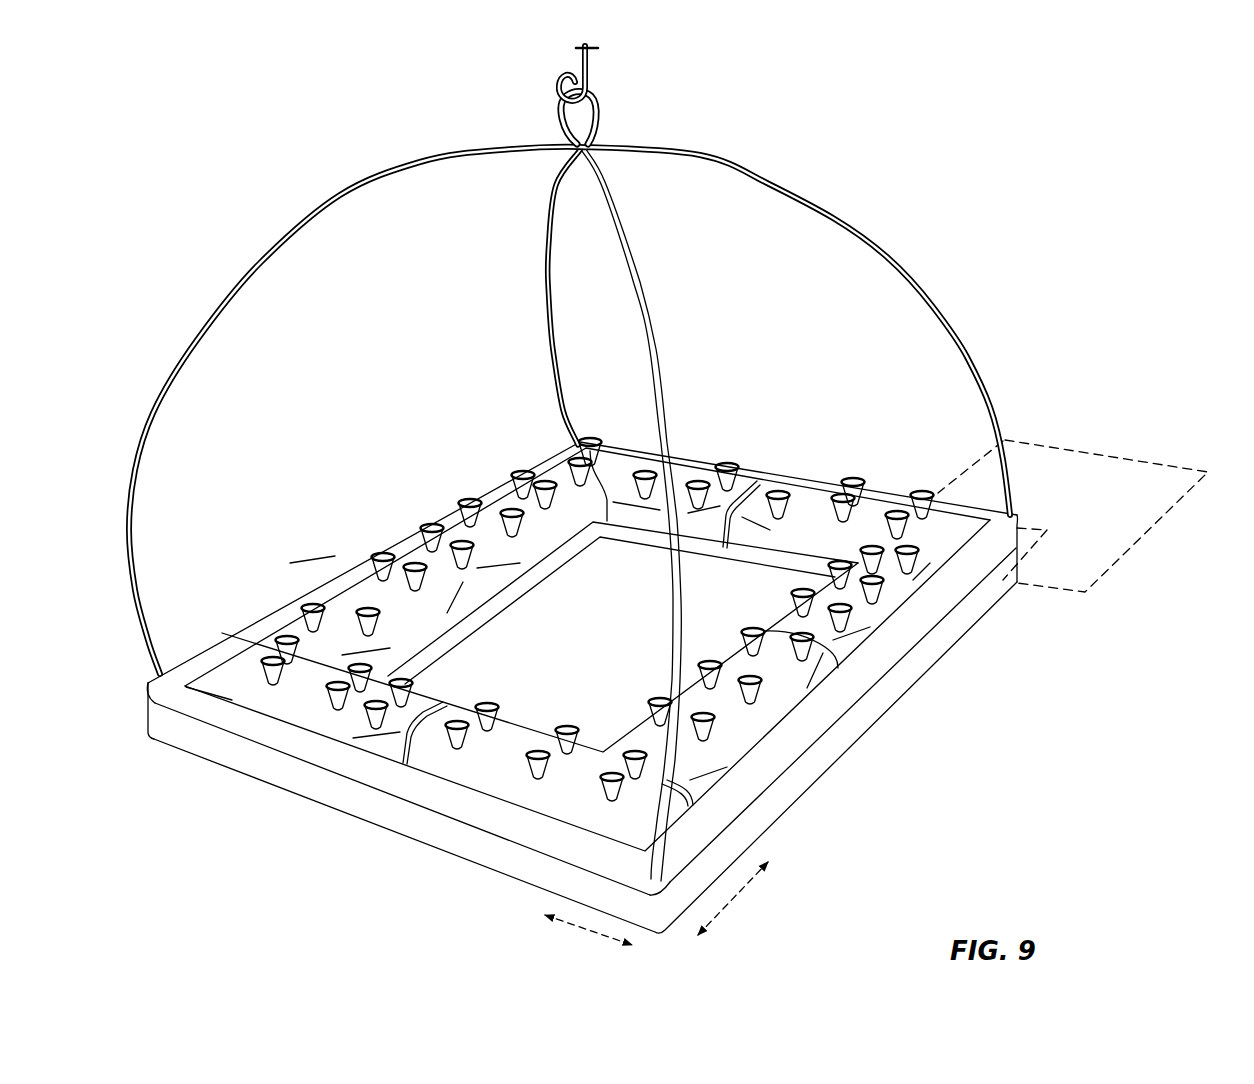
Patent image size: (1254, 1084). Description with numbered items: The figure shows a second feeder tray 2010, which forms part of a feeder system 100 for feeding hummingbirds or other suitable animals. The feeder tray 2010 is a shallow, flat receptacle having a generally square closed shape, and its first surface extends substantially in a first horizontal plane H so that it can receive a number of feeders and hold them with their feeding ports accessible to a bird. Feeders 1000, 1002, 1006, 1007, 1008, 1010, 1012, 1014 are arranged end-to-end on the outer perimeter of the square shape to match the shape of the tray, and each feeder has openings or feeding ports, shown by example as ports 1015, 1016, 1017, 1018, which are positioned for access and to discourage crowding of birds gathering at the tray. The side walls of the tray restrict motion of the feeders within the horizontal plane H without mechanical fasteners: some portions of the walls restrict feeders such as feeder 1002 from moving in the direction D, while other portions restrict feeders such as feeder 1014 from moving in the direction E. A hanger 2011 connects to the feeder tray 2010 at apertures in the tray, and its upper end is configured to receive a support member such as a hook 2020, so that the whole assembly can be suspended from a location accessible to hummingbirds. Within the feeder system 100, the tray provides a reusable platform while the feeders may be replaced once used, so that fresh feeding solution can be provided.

The feeder system 100 is at (1076, 311).
The feeder tray 2010 is at (596, 687).
The hanger 2011 is at (345, 195).
The hook 2020 is at (597, 49).
The feeder 1000 is at (230, 698).
The feeder 1002 is at (494, 499).
The feeder 1006 is at (697, 460).
The mat section 1007 is at (345, 590).
The feeder 1008 is at (800, 483).
The feeder 1010 is at (898, 594).
The feeder 1012 is at (783, 700).
The feeder 1014 is at (460, 766).
The feeding port 1015 is at (320, 687).
The feeding port 1016 is at (717, 718).
The feeding port 1017 is at (848, 604).
The feeding port 1018 is at (521, 469).
The first horizontal plane H is at (1088, 450).
The direction D is at (587, 933).
The direction E is at (733, 900).